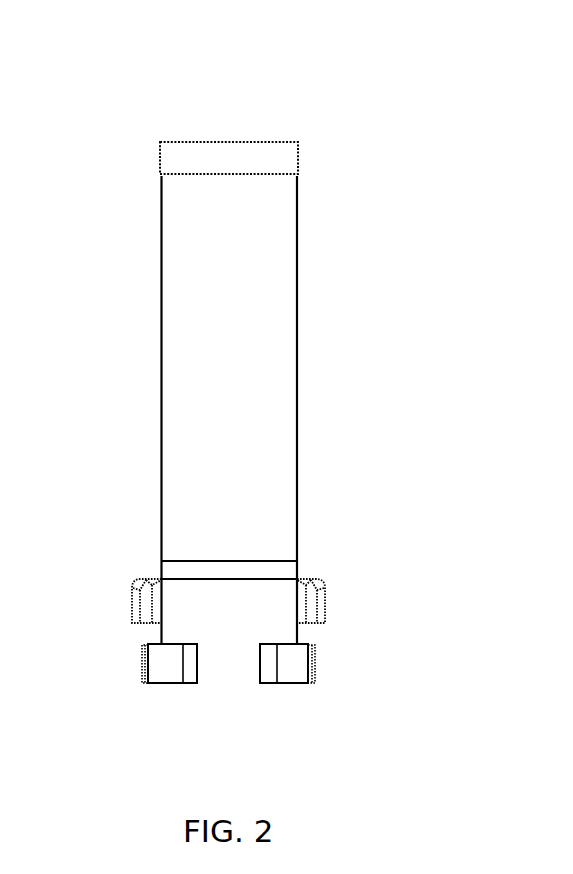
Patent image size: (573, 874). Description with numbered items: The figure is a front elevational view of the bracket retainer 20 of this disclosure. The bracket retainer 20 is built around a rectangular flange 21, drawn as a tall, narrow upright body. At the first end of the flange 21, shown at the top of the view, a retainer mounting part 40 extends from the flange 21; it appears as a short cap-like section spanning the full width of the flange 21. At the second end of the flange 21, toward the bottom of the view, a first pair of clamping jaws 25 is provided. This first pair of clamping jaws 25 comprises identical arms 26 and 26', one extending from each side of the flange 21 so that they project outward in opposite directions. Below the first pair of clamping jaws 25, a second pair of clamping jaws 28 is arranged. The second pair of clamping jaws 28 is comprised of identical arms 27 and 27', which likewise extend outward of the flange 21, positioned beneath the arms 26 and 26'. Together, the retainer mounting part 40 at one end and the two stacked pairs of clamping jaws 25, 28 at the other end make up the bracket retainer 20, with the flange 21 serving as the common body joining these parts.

The bracket retainer 20 is at (282, 104).
The rectangular flange 21 is at (282, 312).
The retainer mounting part 40 is at (200, 142).
The first pair of clamping jaws 25 is at (329, 558).
The arm 26 is at (349, 601).
The arm 26' is at (103, 583).
The arm 27 is at (332, 667).
The arm 27' is at (121, 670).
The second pair of clamping jaws 28 is at (232, 703).